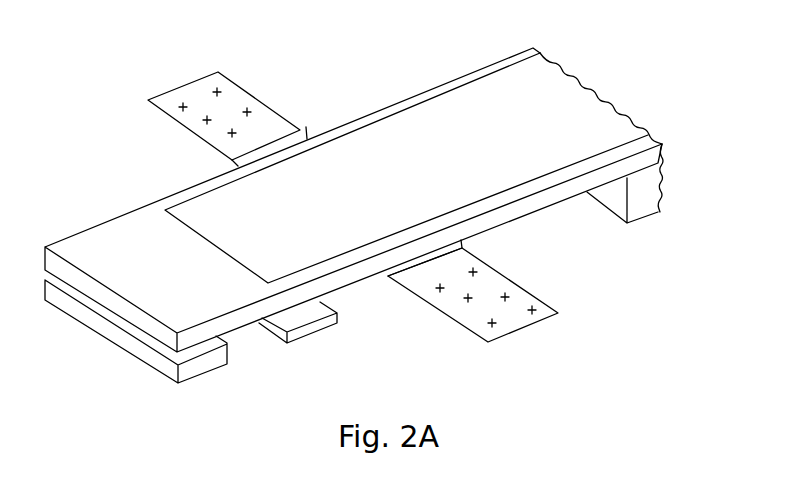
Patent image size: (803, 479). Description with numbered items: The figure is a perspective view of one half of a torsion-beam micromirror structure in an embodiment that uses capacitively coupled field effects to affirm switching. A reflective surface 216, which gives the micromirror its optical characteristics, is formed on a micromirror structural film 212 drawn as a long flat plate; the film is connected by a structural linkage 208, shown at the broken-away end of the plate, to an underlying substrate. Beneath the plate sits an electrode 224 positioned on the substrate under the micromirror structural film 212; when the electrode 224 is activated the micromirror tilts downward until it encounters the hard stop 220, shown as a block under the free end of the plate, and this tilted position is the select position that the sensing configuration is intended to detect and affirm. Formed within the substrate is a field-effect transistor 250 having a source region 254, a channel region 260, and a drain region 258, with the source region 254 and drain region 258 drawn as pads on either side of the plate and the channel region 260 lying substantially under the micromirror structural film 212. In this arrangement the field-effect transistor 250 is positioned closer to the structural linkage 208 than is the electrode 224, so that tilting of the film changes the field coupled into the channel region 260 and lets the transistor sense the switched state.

The structural linkage 208 is at (664, 192).
The micromirror structural film 212 is at (124, 238).
The reflective surface 216 is at (438, 121).
The hard stop 220 is at (178, 384).
The electrode 224 is at (323, 338).
The field-effect transistor 250 is at (543, 280).
The source region 254 is at (233, 93).
The drain region 258 is at (520, 324).
The channel region 260 is at (311, 128).